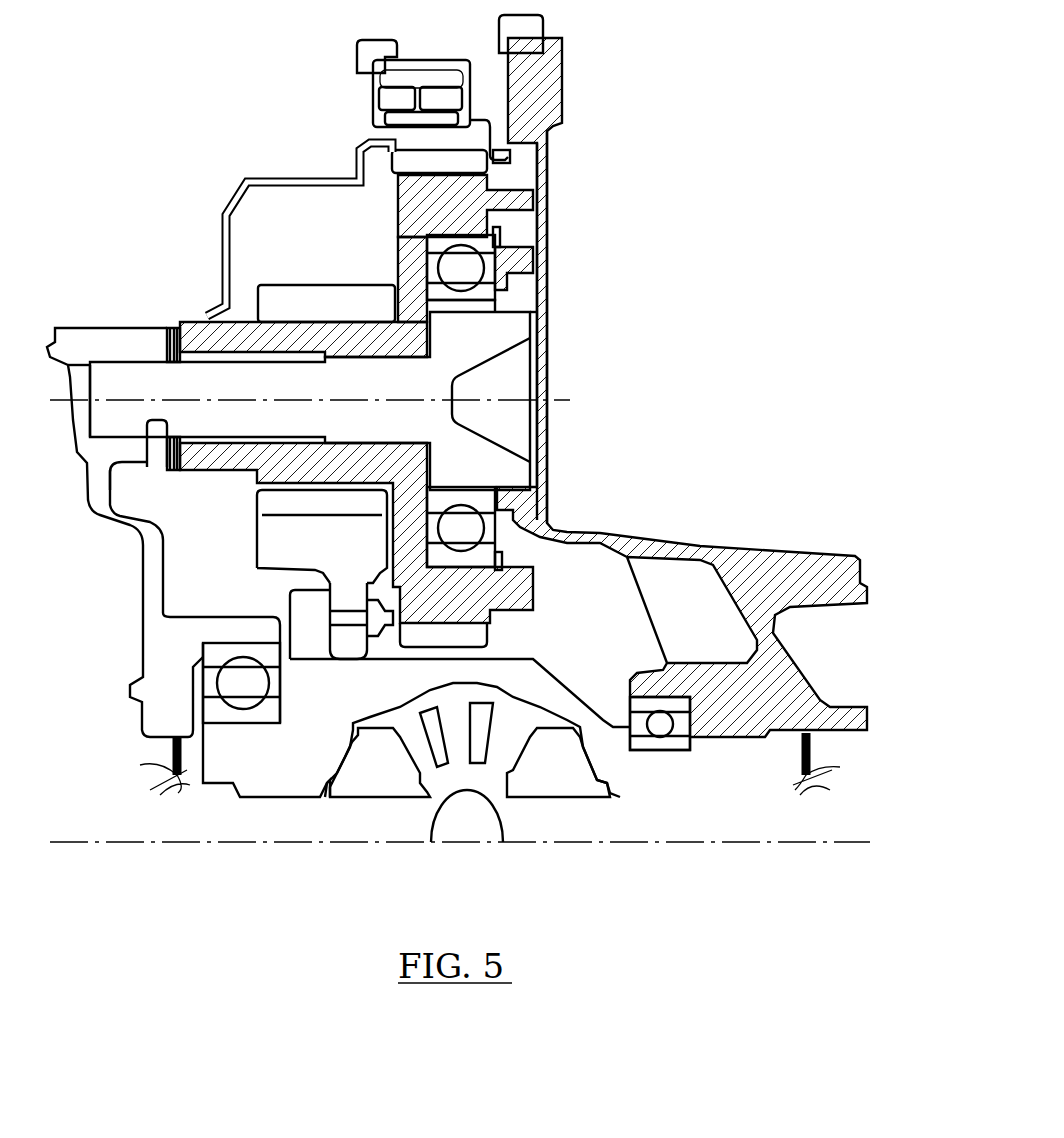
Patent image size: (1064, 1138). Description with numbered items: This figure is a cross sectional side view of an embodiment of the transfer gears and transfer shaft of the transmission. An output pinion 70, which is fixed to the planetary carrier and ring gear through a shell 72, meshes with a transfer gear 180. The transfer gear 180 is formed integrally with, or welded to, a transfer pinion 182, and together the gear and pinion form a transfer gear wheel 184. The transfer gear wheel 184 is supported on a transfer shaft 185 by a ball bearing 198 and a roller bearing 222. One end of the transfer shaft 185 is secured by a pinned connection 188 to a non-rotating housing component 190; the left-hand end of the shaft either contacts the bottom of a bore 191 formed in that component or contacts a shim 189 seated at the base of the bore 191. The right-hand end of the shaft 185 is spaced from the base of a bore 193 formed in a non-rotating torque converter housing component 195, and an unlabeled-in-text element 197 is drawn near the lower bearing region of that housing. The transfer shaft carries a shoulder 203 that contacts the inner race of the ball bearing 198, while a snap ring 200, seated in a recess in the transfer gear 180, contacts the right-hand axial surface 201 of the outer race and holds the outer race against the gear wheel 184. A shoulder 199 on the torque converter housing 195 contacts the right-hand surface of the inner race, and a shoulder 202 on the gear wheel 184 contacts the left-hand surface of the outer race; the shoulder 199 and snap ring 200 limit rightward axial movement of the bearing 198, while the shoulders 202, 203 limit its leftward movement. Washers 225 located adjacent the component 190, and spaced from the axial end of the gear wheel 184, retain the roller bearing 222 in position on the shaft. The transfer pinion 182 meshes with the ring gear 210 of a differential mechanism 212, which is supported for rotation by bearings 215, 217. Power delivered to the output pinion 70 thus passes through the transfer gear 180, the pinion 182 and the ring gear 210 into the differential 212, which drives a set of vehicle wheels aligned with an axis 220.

The output pinion 70 is at (385, 130).
The shell 72 is at (315, 178).
The transfer gear 180 is at (513, 190).
The transfer pinion 182 is at (300, 300).
The transfer gear wheel 184 is at (266, 268).
The transfer shaft 185 is at (400, 389).
The pinned connection 188 is at (147, 470).
The shim 189 is at (87, 373).
The non-rotating housing component 190 is at (148, 592).
The bore 191 is at (137, 370).
The bore 193 is at (527, 313).
The torque converter housing component 195 is at (543, 447).
The bearing 197 is at (473, 487).
The ball bearing 198 is at (461, 267).
The shoulder 199 is at (480, 303).
The snap ring 200 is at (503, 555).
The right-hand axial surface 201 is at (500, 243).
The shoulder 202 is at (468, 200).
The shoulder 203 is at (410, 272).
The ring gear 210 is at (280, 538).
The differential mechanism 212 is at (243, 602).
The bearing 215 is at (233, 683).
The bearing 217 is at (660, 738).
The axis 220 is at (513, 843).
The roller bearing 222 is at (222, 443).
The washers 225 is at (178, 325).